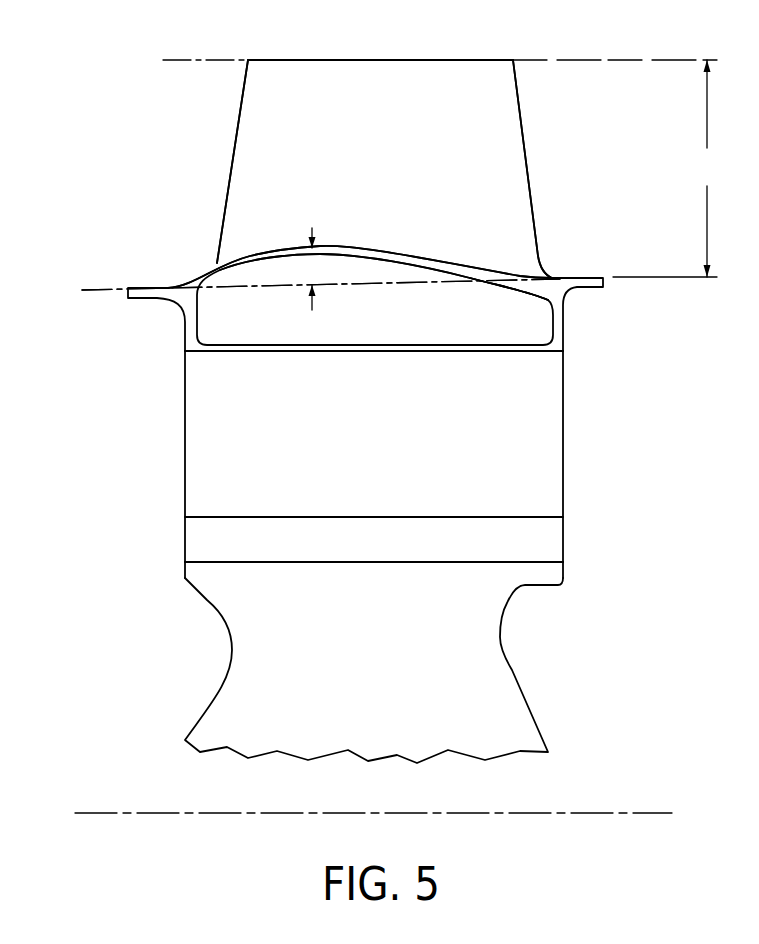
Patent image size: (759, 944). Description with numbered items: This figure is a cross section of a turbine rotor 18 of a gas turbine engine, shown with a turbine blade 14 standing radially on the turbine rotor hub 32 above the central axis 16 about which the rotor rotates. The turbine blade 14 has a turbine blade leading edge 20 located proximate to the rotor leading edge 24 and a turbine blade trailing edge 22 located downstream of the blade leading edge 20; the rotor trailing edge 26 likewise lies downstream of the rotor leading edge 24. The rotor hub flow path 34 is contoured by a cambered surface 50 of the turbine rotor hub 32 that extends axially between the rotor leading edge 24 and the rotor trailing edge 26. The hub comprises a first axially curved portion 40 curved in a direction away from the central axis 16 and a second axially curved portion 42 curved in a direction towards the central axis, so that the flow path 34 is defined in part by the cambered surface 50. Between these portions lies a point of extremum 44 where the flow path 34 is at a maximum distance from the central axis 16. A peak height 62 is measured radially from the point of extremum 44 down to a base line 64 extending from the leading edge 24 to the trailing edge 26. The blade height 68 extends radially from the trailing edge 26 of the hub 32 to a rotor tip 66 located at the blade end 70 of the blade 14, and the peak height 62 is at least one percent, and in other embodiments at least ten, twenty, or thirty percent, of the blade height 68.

The turbine blade 14 is at (391, 148).
The central axis 16 is at (597, 812).
The turbine rotor 18 is at (610, 553).
The turbine blade leading edge 20 is at (237, 127).
The turbine blade trailing edge 22 is at (526, 128).
The rotor leading edge 24 is at (127, 297).
The rotor trailing edge 26 is at (603, 283).
The turbine rotor hub 32 is at (390, 462).
The rotor hub flow path 34 is at (397, 238).
The first axially curved portion 40 is at (277, 247).
The second axially curved portion 42 is at (433, 260).
The point of extremum 44 is at (322, 245).
The cambered surface 50 is at (478, 268).
The peak height 62 is at (303, 272).
The base line 64 is at (374, 287).
The rotor tip 66 is at (513, 59).
The blade height 68 is at (668, 168).
The blade end 70 is at (437, 59).